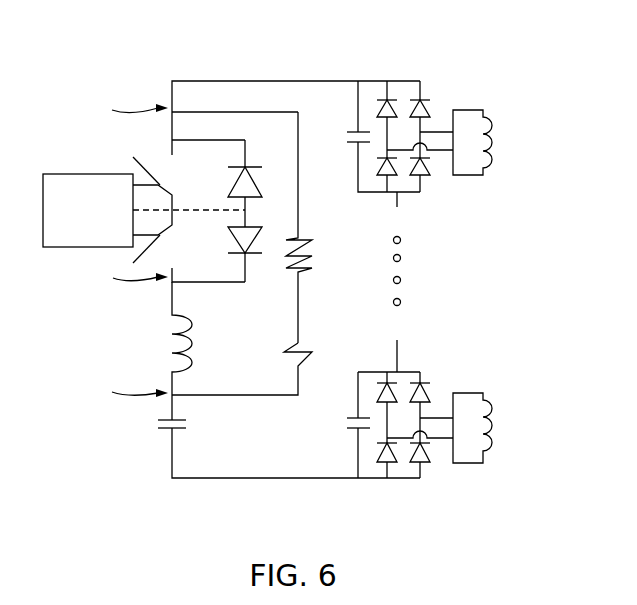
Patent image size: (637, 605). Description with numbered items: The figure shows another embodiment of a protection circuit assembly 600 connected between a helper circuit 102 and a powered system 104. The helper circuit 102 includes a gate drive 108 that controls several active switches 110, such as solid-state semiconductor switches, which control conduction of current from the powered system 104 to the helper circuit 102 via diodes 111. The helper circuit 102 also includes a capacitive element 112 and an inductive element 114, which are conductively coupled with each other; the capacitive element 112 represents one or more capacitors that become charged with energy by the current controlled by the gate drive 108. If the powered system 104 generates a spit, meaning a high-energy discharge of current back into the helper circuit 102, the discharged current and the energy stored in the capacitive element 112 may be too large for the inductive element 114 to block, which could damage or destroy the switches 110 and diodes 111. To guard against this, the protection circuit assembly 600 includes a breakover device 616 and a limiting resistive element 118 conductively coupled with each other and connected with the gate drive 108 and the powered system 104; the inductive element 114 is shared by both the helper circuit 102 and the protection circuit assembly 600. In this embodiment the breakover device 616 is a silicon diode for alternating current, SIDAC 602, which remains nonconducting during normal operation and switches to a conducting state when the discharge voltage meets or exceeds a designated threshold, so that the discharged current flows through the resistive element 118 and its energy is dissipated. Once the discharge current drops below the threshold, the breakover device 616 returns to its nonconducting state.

The helper circuit 102 is at (323, 70).
The gate drive 108 is at (68, 173).
The active switches 110 is at (165, 166).
The diodes 111 is at (223, 180).
The silicon diode for alternating current (SIDAC) 602 is at (303, 232).
The limiting resistive element 118 is at (293, 345).
The inductive element 114 is at (195, 340).
The capacitive element 112 is at (177, 431).
The breakover device 616 is at (322, 225).
The protection circuit assembly 600 is at (297, 500).
The powered system 104 is at (553, 500).